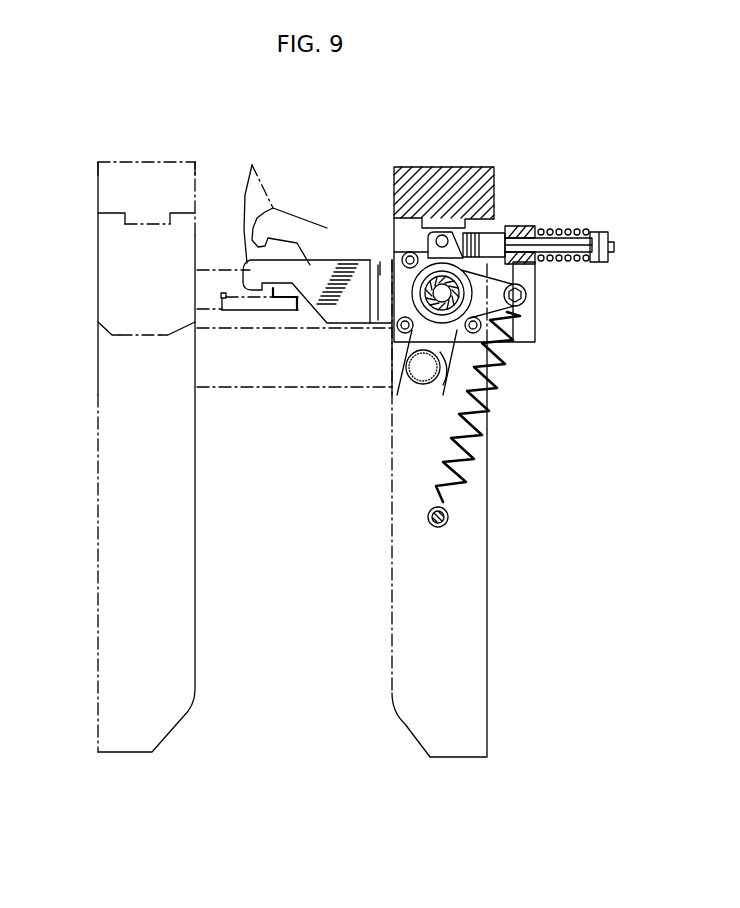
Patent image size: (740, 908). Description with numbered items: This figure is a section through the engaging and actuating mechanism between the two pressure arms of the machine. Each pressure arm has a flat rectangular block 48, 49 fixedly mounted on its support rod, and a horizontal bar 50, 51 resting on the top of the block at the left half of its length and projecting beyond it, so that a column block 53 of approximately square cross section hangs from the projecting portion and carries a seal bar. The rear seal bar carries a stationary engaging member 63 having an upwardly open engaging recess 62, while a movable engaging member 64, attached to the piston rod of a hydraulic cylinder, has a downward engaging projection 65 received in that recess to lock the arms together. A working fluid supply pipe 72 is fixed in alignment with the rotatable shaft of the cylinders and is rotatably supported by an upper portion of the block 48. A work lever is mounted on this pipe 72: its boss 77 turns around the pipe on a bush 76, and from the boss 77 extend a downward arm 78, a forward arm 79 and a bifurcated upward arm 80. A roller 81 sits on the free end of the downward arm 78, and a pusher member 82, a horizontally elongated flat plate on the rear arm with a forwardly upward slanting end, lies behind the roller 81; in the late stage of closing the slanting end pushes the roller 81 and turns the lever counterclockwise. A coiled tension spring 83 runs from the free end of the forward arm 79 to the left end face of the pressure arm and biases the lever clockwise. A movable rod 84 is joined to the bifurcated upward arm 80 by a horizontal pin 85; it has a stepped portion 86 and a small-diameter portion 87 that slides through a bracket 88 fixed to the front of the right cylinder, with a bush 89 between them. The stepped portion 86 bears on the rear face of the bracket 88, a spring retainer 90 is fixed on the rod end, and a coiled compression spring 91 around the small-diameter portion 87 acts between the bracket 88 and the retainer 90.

The flat rectangular parallelepipedal block 48 is at (490, 540).
The flat rectangular parallelepipedal block 49 is at (98, 507).
The horizontal bar 50 is at (470, 176).
The horizontal bar 51 is at (150, 162).
The column block 53 is at (130, 335).
The engaging recess 62 is at (223, 302).
The stationary engaging member 63 is at (238, 320).
The movable engaging member 64 is at (251, 166).
The engaging projection 65 is at (266, 325).
The working fluid supply pipe 72 is at (410, 307).
The bush 76 is at (393, 260).
The boss 77 is at (378, 264).
The downward arm 78 is at (425, 372).
The forward arm 79 is at (523, 343).
The bifurcated upward arm 80 is at (432, 232).
The roller 81 is at (413, 378).
The pusher member 82 is at (318, 387).
The coiled tension spring 83 is at (470, 470).
The movable rod 84 is at (507, 231).
The horizontal pin 85 is at (443, 236).
The stepped portion 86 is at (513, 229).
The small-diameter portion 87 is at (558, 238).
The bracket 88 is at (535, 305).
The bush 89 is at (534, 264).
The spring retainer 90 is at (603, 262).
The coiled compression spring 91 is at (580, 232).